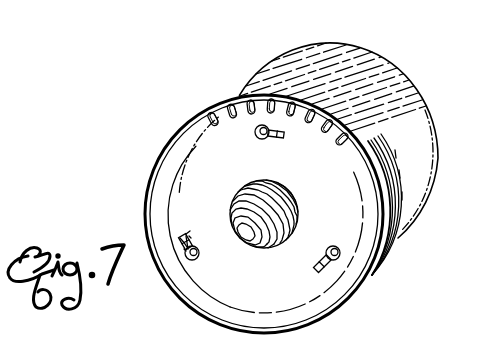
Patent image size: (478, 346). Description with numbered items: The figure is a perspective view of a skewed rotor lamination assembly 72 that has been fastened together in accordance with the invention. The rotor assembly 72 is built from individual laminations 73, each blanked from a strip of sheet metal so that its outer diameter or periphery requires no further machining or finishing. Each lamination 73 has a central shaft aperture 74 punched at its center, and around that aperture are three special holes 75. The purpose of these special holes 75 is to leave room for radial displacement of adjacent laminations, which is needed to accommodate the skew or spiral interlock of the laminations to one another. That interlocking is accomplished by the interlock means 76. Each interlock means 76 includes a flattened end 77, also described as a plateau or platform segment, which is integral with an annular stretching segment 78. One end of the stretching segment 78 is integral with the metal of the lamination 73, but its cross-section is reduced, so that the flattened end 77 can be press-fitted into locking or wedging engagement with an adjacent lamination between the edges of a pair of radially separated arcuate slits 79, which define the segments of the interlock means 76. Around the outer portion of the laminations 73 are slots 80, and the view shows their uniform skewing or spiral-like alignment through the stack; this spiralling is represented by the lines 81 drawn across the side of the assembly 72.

The rotor lamination assembly 72 is at (158, 152).
The lamination 73 is at (345, 286).
The central shaft aperture 74 is at (246, 188).
The special holes 75 is at (254, 133).
The interlock means 76 is at (287, 138).
The flattened end 77 is at (195, 246).
The stretching segment 78 is at (182, 242).
The arcuate slits 79 is at (191, 236).
The slots 80 is at (250, 100).
The lines 81 is at (297, 55).